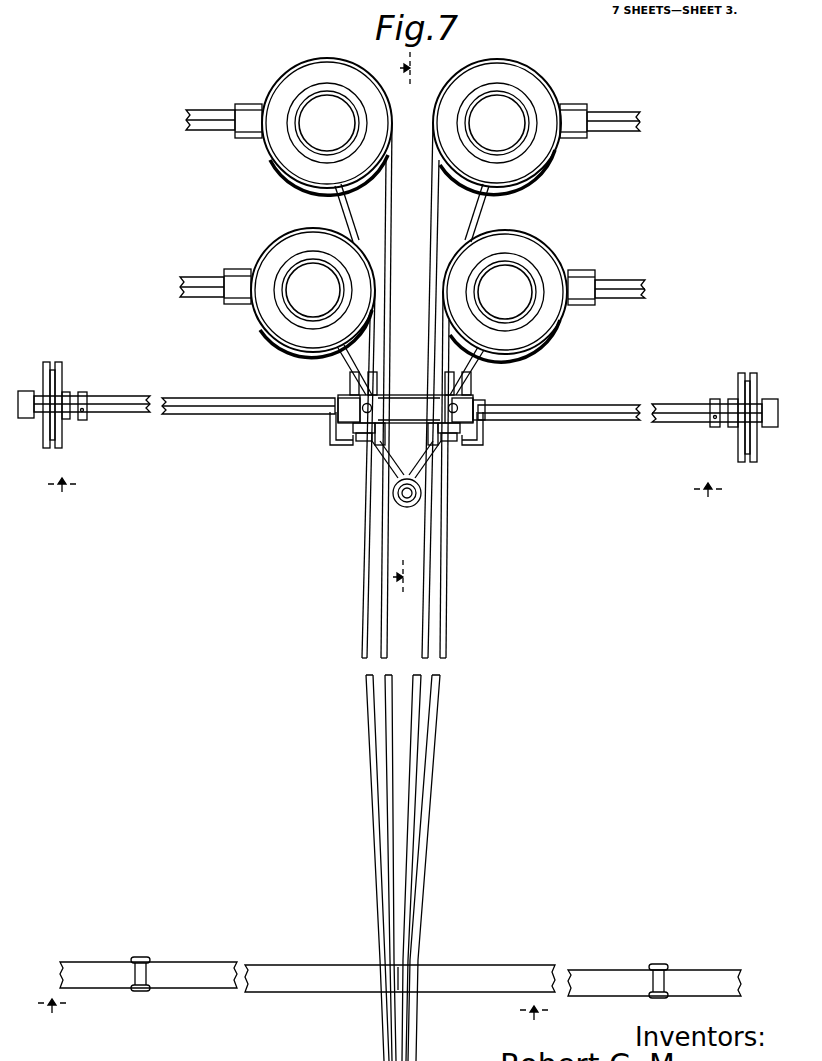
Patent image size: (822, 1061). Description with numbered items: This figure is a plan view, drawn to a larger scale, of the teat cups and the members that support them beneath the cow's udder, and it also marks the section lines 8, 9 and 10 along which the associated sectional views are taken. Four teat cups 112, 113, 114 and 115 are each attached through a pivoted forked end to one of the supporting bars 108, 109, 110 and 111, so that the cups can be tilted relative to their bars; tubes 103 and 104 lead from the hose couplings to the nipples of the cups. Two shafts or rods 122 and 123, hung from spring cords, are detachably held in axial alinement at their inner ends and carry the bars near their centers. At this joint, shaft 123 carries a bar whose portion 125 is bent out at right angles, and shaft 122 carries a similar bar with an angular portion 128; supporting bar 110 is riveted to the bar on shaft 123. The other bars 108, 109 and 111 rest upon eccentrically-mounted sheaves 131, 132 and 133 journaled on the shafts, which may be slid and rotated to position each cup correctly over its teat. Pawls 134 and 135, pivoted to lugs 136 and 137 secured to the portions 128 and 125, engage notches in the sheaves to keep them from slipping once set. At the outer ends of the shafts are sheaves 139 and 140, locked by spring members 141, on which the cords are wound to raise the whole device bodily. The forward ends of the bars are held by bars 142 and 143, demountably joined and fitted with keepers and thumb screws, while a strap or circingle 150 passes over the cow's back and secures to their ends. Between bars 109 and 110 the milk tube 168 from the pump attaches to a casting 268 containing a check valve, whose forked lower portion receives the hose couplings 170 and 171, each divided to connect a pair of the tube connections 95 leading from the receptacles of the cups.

The tube connection 95 is at (333, 198).
The tube 103 is at (216, 120).
The tube 104 is at (205, 285).
The supporting bar 108 is at (364, 578).
The supporting bar 109 is at (385, 612).
The supporting bar 110 is at (428, 590).
The supporting bar 111 is at (445, 611).
The teat cup 112 is at (278, 265).
The teat cup 113 is at (290, 150).
The teat cup 114 is at (540, 145).
The teat cup 115 is at (540, 272).
The shaft 122 is at (190, 412).
The shaft 123 is at (610, 418).
The bent portion 125 is at (485, 408).
The angular portion 128 is at (398, 404).
The eccentrically-mounted sheave 131 is at (338, 422).
The eccentrically-mounted sheave 132 is at (375, 448).
The eccentrically-mounted sheave 133 is at (487, 426).
The pawl 134 is at (345, 437).
The pawl 135 is at (465, 440).
The lug 136 is at (347, 402).
The lug 137 is at (470, 400).
The sheave 139 is at (48, 365).
The sheave 140 is at (755, 378).
The spring member 141 is at (82, 393).
The bar 142 is at (205, 975).
The bar 143 is at (487, 975).
The strap 150 is at (105, 972).
The tube 168 is at (394, 492).
The hose coupling 170 is at (380, 455).
The hose coupling 171 is at (440, 455).
The casting 268 is at (400, 505).
The section line 8- 8 is at (288, 1008).
The section line 9- 9 is at (386, 487).
The section line 10- 10 is at (414, 322).